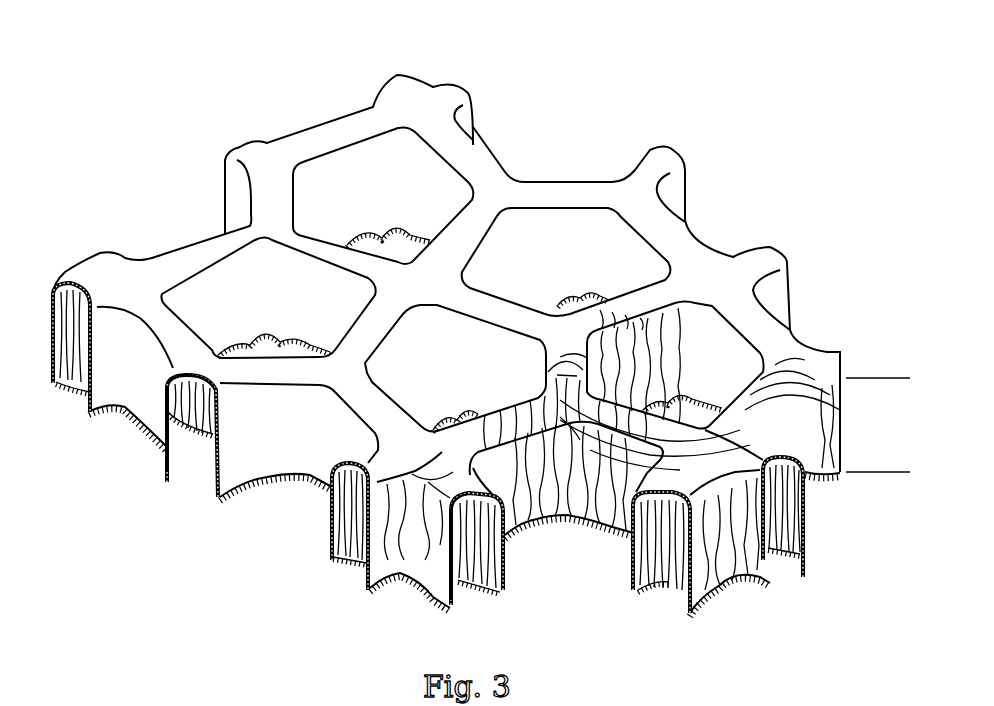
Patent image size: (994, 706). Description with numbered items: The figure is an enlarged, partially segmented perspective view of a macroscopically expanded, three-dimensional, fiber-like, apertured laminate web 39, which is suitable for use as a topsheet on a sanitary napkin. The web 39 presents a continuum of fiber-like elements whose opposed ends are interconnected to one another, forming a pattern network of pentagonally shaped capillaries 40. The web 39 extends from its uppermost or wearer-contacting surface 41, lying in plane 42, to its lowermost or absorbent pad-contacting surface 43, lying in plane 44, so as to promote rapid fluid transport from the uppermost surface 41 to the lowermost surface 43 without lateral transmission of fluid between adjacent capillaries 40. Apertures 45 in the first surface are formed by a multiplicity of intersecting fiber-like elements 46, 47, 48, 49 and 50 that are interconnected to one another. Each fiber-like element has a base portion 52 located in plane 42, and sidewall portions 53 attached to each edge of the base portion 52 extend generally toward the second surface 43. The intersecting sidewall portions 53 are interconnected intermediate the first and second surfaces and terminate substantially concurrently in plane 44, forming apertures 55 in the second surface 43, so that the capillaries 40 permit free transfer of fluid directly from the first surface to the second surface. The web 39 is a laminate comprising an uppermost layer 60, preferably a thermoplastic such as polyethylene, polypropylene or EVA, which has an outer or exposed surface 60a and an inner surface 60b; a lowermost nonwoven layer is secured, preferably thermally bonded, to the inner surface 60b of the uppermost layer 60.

The laminate web 39 is at (285, 116).
The capillaries 40 is at (418, 167).
The uppermost surface 41 is at (680, 246).
The plane of uppermost surface 42 is at (866, 364).
The lowermost surface 43 is at (572, 283).
The plane of lowermost surface 44 is at (869, 457).
The apertures 45 is at (282, 298).
The fiber-like element 46 is at (248, 243).
The fiber-like element 47 is at (390, 274).
The fiber-like element 48 is at (392, 302).
The fiber-like element 49 is at (317, 369).
The fiber-like element 50 is at (196, 358).
The base portion 52 is at (456, 506).
The sidewall portions 53 is at (446, 573).
The apertures in second surface 55 is at (698, 403).
The uppermost layer 60 is at (173, 488).
The outer surface 60a is at (166, 413).
The inner surface 60b is at (169, 470).